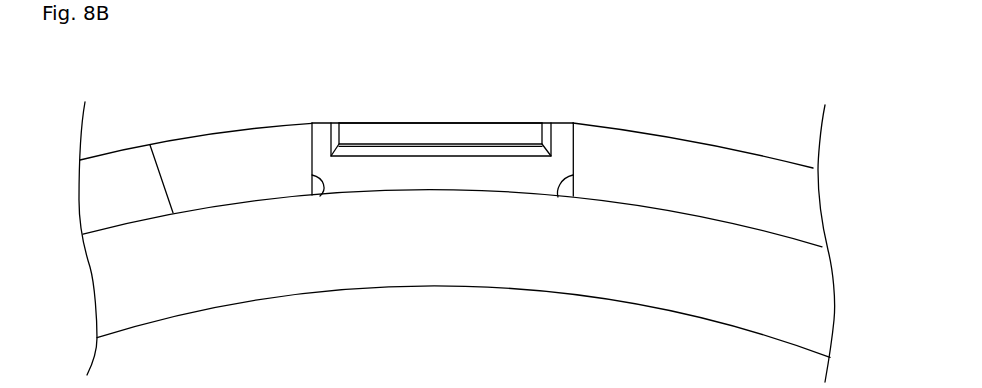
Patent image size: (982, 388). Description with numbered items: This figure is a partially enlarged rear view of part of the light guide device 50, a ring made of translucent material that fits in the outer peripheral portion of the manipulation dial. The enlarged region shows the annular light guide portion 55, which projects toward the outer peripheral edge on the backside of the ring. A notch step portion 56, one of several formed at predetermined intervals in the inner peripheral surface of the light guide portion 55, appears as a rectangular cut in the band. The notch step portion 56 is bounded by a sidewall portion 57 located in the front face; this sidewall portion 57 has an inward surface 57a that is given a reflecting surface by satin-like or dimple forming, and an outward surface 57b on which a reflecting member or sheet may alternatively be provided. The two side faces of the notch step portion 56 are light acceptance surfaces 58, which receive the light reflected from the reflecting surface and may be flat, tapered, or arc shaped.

The light guide device 50 is at (668, 280).
The light guide portion 55 is at (697, 155).
The notch step portion 56 is at (455, 170).
The sidewall portion 57 is at (388, 130).
The inward surface 57a is at (397, 143).
The outward surface 57b is at (475, 120).
The light acceptance surface 58 is at (320, 196).